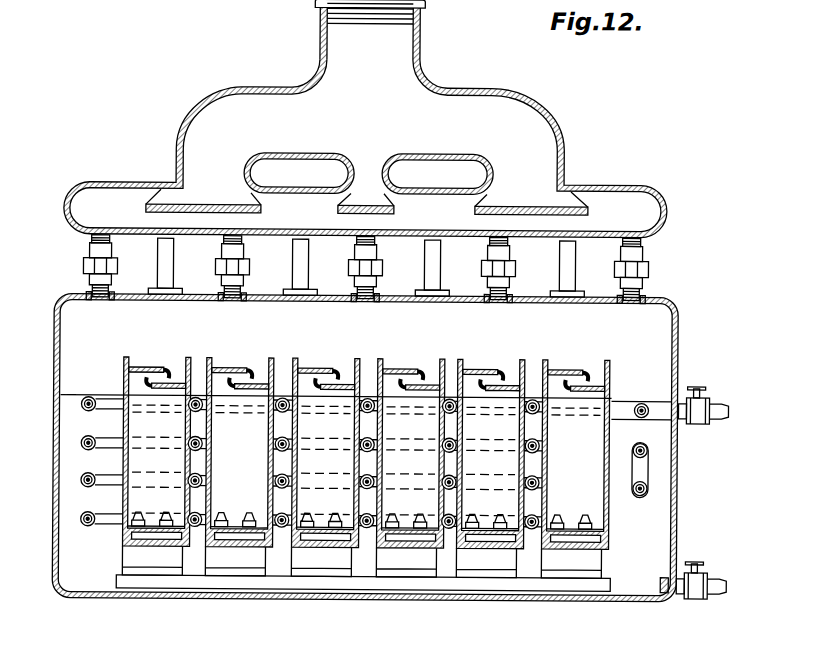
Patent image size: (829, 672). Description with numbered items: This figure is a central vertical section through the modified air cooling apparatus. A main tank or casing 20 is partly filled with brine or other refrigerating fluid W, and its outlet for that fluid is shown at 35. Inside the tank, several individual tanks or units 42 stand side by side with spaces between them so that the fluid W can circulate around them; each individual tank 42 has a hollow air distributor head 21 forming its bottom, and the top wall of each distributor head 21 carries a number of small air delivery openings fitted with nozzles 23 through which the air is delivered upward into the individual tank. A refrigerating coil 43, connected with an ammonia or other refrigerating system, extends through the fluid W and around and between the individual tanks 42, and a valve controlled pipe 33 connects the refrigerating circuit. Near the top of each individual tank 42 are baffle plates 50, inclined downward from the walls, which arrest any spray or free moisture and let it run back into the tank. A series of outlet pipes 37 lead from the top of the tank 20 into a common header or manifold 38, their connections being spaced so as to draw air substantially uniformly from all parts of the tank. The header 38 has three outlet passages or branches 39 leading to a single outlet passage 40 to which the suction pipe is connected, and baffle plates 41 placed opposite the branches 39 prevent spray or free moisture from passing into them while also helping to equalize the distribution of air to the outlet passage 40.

The tank or casing 20 is at (678, 334).
The hollow air distributor head 21 is at (577, 542).
The nozzles 23 is at (587, 518).
The valve controlled pipe 33 is at (729, 409).
The outlet 35 is at (713, 574).
The outlet pipes 37 is at (623, 292).
The header or manifold 38 is at (623, 191).
The outlet passages or branches 39 is at (503, 172).
The outlet passage 40 is at (370, 30).
The baffle plates 41 is at (524, 207).
The individual tank or unit 42 is at (626, 518).
The refrigerating coil 43 is at (650, 468).
The baffle plates 50 is at (340, 380).
The refrigerating fluid W is at (72, 397).